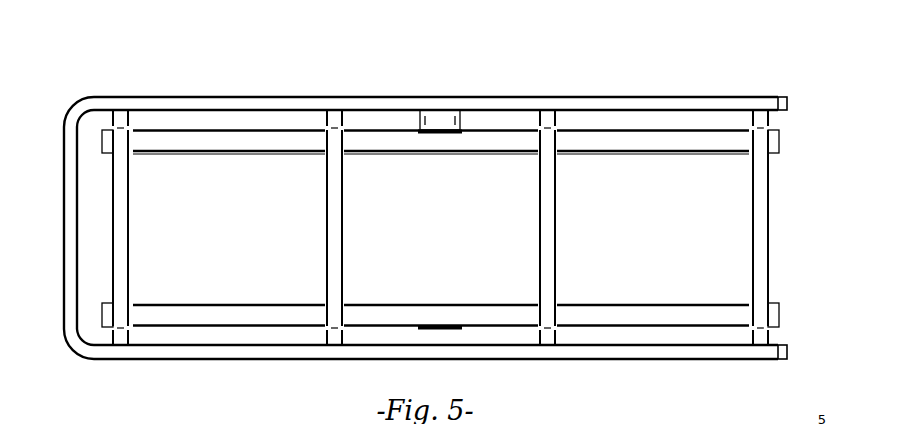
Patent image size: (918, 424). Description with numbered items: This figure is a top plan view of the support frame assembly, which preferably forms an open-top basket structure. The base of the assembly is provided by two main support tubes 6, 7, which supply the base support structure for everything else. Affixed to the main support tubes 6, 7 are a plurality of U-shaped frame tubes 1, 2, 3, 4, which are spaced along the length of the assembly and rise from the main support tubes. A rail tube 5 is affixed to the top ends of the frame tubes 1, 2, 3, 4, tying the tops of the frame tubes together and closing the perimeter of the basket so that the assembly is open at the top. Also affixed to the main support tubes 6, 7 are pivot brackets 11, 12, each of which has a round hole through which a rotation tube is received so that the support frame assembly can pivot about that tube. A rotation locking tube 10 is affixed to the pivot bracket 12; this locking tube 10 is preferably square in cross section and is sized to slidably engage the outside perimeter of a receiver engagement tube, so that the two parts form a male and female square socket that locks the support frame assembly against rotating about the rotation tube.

The U-shaped frame tube 1 is at (770, 247).
The U-shaped frame tube 2 is at (556, 240).
The U-shaped frame tube 3 is at (343, 230).
The U-shaped frame tube 4 is at (129, 247).
The rail tube 5 is at (72, 105).
The main support tube 6 is at (173, 153).
The main support tube 7 is at (199, 304).
The rotation locking tube 10 is at (462, 118).
The pivot bracket 11 is at (451, 330).
The pivot bracket 12 is at (418, 128).